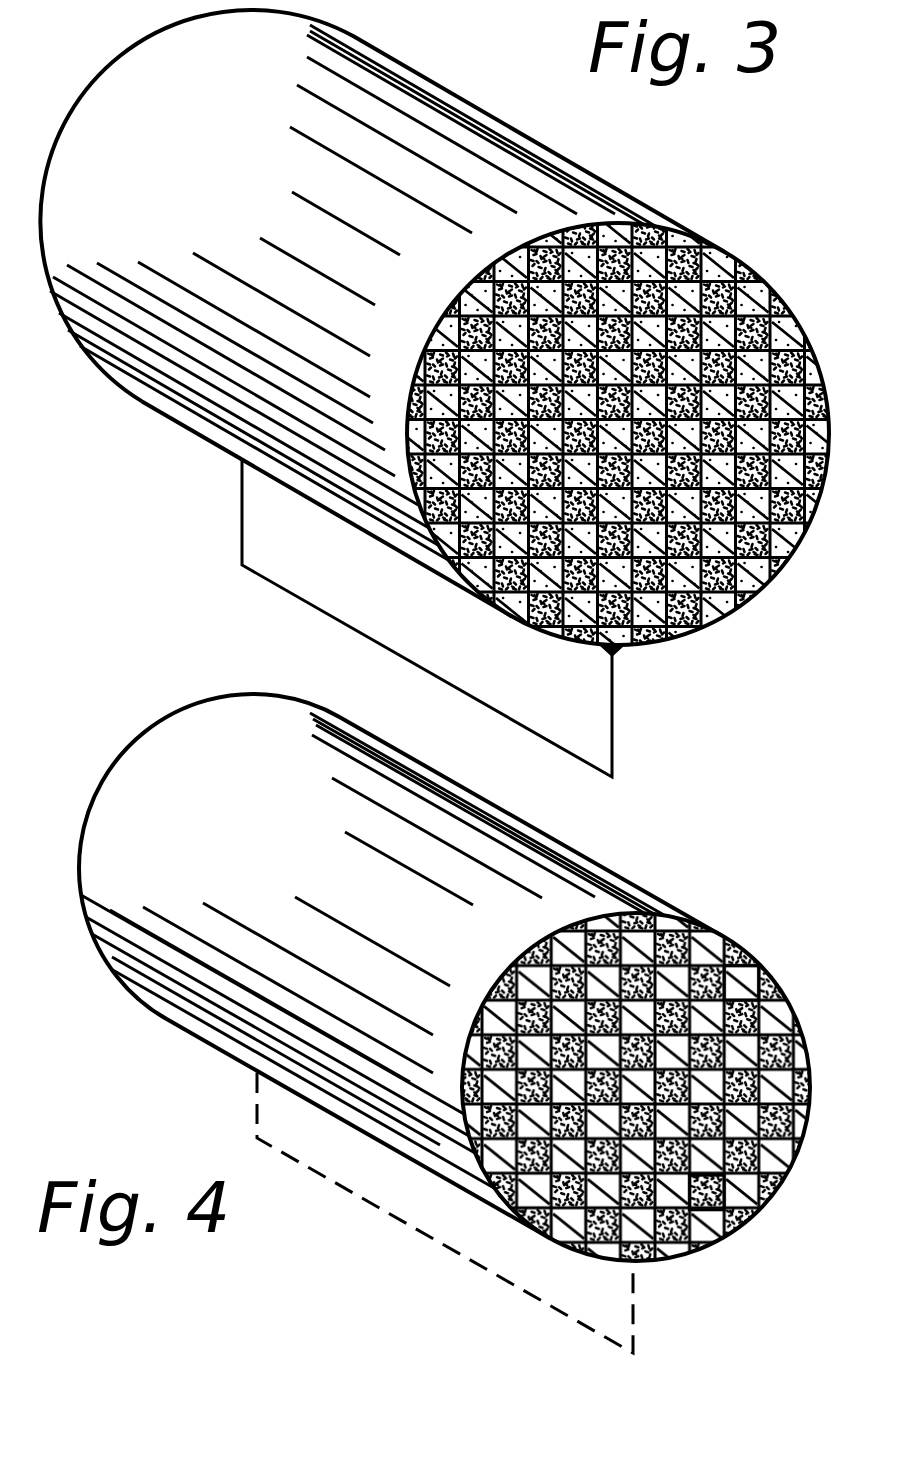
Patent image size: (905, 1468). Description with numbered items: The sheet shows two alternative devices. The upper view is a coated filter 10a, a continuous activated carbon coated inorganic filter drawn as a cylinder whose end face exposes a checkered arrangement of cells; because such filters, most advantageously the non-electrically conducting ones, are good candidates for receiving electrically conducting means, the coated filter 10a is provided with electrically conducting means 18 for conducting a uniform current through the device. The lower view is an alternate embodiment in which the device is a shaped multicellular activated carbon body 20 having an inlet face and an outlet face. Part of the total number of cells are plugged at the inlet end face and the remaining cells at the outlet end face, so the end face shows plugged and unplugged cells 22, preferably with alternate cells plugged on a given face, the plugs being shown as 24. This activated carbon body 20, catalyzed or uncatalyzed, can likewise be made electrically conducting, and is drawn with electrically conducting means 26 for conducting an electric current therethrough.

In FIG. 3, the coated filter 10a is at (646, 166).
In FIG. 3, the electrically conducting means 18 is at (285, 595).
In FIG. 4, the multicellular activated carbon body 20 is at (650, 854).
In FIG. 4, the plugged and unplugged cells 22 is at (740, 978).
In FIG. 4, the plugs 24 is at (672, 1245).
In FIG. 4, the electrically conducting means 26 is at (388, 1213).